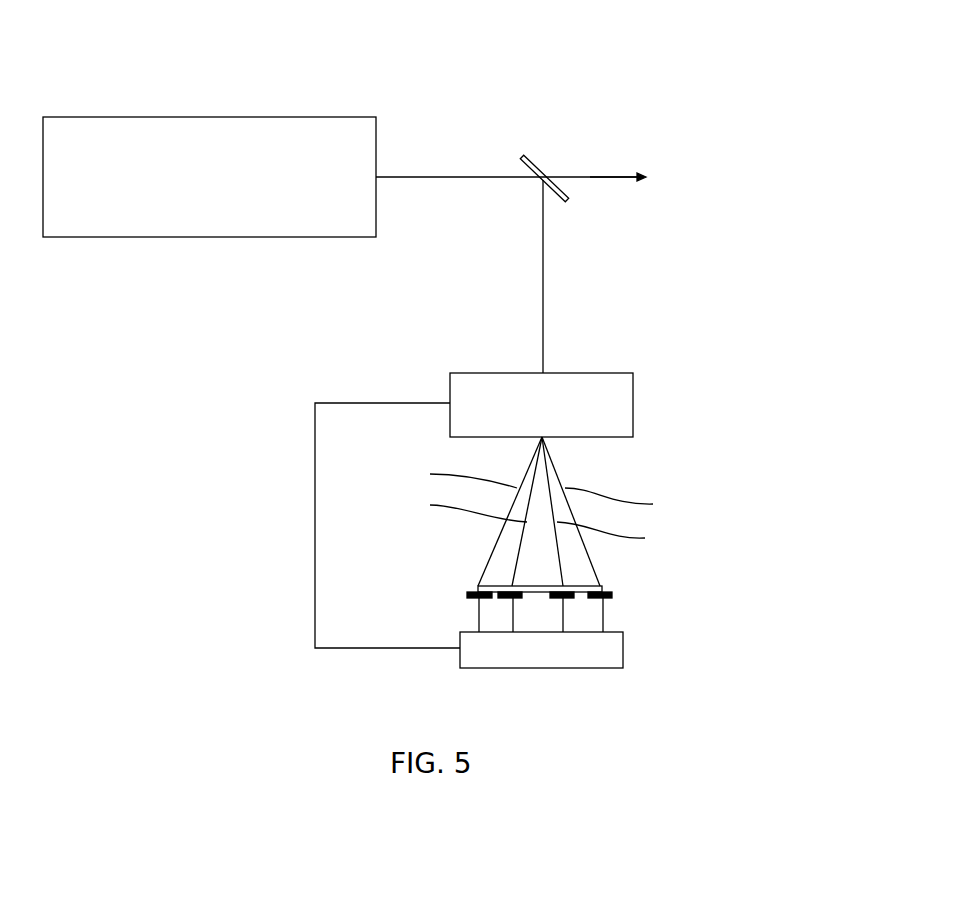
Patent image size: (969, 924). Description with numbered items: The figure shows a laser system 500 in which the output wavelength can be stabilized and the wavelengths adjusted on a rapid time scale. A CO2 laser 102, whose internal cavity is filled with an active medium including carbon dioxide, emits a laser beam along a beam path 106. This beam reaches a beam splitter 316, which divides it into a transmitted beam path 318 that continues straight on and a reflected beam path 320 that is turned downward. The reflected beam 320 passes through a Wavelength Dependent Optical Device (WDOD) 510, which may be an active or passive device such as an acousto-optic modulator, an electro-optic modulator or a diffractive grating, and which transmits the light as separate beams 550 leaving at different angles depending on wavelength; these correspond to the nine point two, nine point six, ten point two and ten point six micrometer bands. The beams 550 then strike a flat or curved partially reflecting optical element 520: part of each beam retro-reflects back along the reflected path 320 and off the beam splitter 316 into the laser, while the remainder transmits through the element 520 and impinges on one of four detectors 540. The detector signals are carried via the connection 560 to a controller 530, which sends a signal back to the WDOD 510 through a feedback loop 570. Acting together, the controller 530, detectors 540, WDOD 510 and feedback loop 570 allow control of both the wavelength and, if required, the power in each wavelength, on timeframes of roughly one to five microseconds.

The system 500 is at (390, 60).
The CO2 laser 102 is at (277, 238).
The beam path 106 is at (511, 164).
The beam splitter 316 is at (530, 155).
The transmitted beam path 318 is at (592, 177).
The reflected beam path 320 is at (543, 260).
The Wavelength Dependent Optical Device (WDOD) 510 is at (633, 392).
The laser beams 550 is at (553, 464).
The feedback loop 570 is at (315, 532).
The partially reflecting optical element 520 is at (478, 588).
The detectors 540 is at (613, 593).
The signal transmission path 560 is at (602, 618).
The controller 530 is at (623, 650).